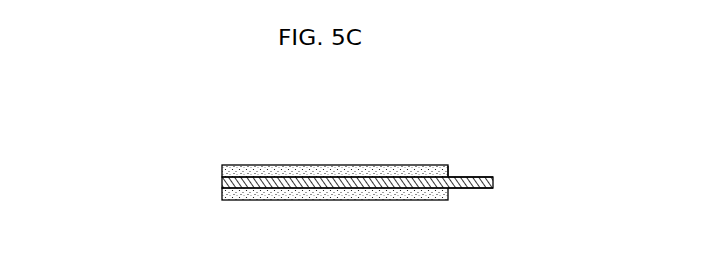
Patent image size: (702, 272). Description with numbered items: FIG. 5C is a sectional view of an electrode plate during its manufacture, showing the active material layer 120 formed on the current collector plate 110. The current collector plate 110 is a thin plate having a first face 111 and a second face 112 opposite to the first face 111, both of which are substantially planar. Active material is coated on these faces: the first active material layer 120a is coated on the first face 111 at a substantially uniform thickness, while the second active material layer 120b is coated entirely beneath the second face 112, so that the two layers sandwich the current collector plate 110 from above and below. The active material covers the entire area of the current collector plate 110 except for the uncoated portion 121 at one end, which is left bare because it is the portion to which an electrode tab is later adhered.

The active material layer 120 is at (255, 175).
The first active material layer 120a is at (222, 170).
The second active material layer 120b is at (222, 192).
The current collector plate 110 is at (494, 182).
The first face 111 is at (480, 175).
The second face 112 is at (488, 190).
The uncoated portion 121 is at (463, 173).